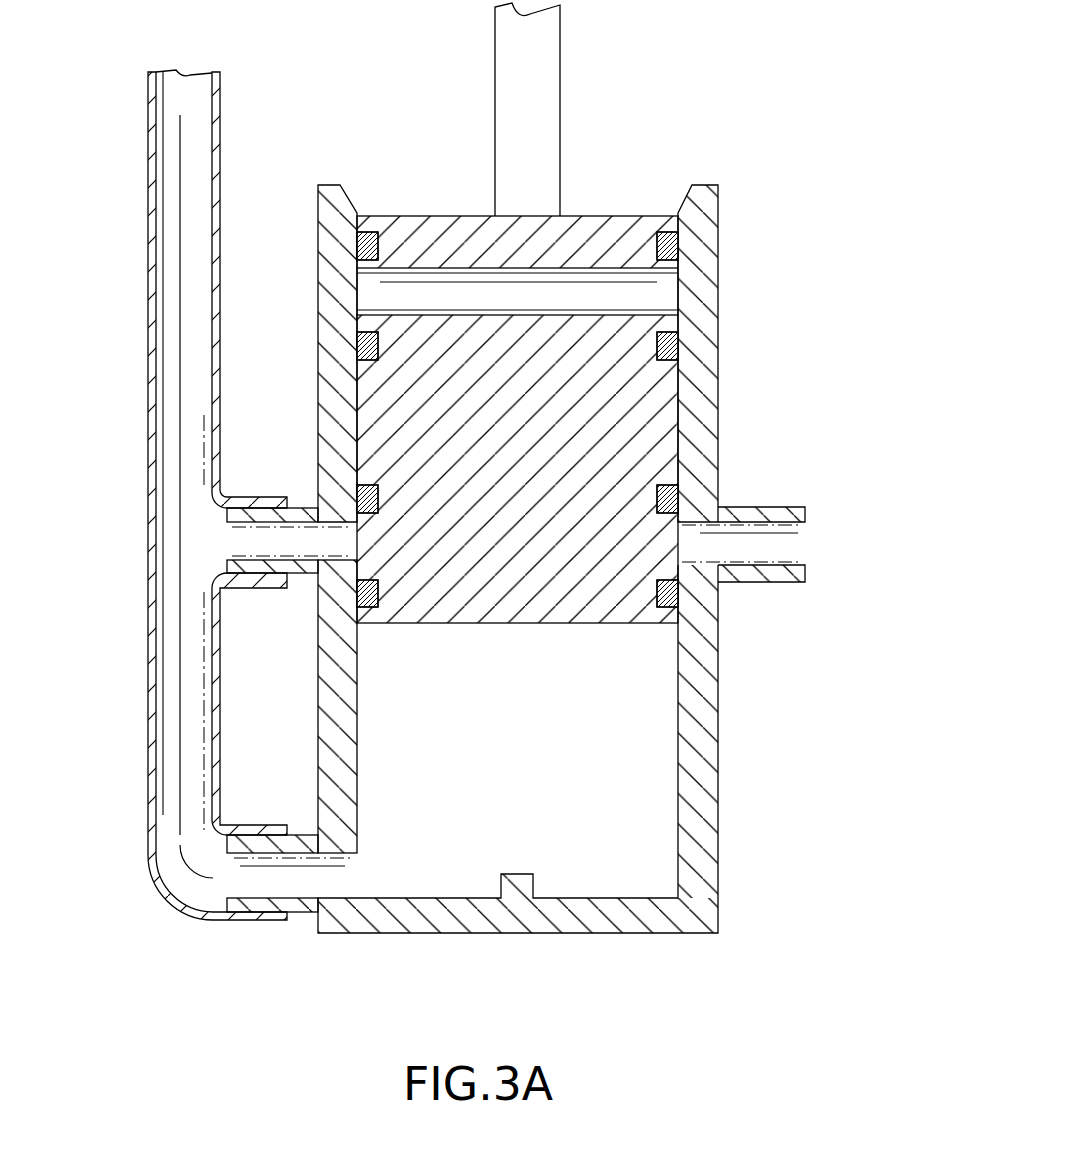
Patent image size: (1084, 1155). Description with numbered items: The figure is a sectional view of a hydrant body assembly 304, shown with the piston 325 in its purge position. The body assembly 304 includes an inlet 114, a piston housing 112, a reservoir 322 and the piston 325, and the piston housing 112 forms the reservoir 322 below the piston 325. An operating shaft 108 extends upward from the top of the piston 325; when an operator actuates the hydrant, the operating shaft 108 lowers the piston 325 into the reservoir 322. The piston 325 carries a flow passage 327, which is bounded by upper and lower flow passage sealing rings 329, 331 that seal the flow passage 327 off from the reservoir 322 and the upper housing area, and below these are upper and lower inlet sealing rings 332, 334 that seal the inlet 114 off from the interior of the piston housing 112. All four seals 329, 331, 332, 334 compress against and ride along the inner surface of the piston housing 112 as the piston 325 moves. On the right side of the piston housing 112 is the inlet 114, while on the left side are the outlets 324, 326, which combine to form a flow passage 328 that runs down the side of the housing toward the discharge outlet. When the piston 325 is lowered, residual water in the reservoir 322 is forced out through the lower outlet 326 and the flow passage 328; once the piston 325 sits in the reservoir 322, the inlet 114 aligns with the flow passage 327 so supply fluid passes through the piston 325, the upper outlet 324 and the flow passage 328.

The operating shaft 108 is at (547, 53).
The piston housing 112 is at (718, 274).
The inlet 114 is at (805, 543).
The body assembly 304 is at (812, 92).
The reservoir 322 is at (660, 790).
The outlet 324 is at (295, 535).
The piston 325 is at (662, 418).
The outlet 326 is at (273, 885).
The flow passage 327 is at (357, 292).
The flow passage 328 is at (172, 477).
The upper flow passage sealing ring 329 is at (678, 250).
The lower flow passage sealing ring 331 is at (670, 347).
The upper inlet sealing ring 332 is at (676, 493).
The lower inlet sealing ring 334 is at (676, 592).